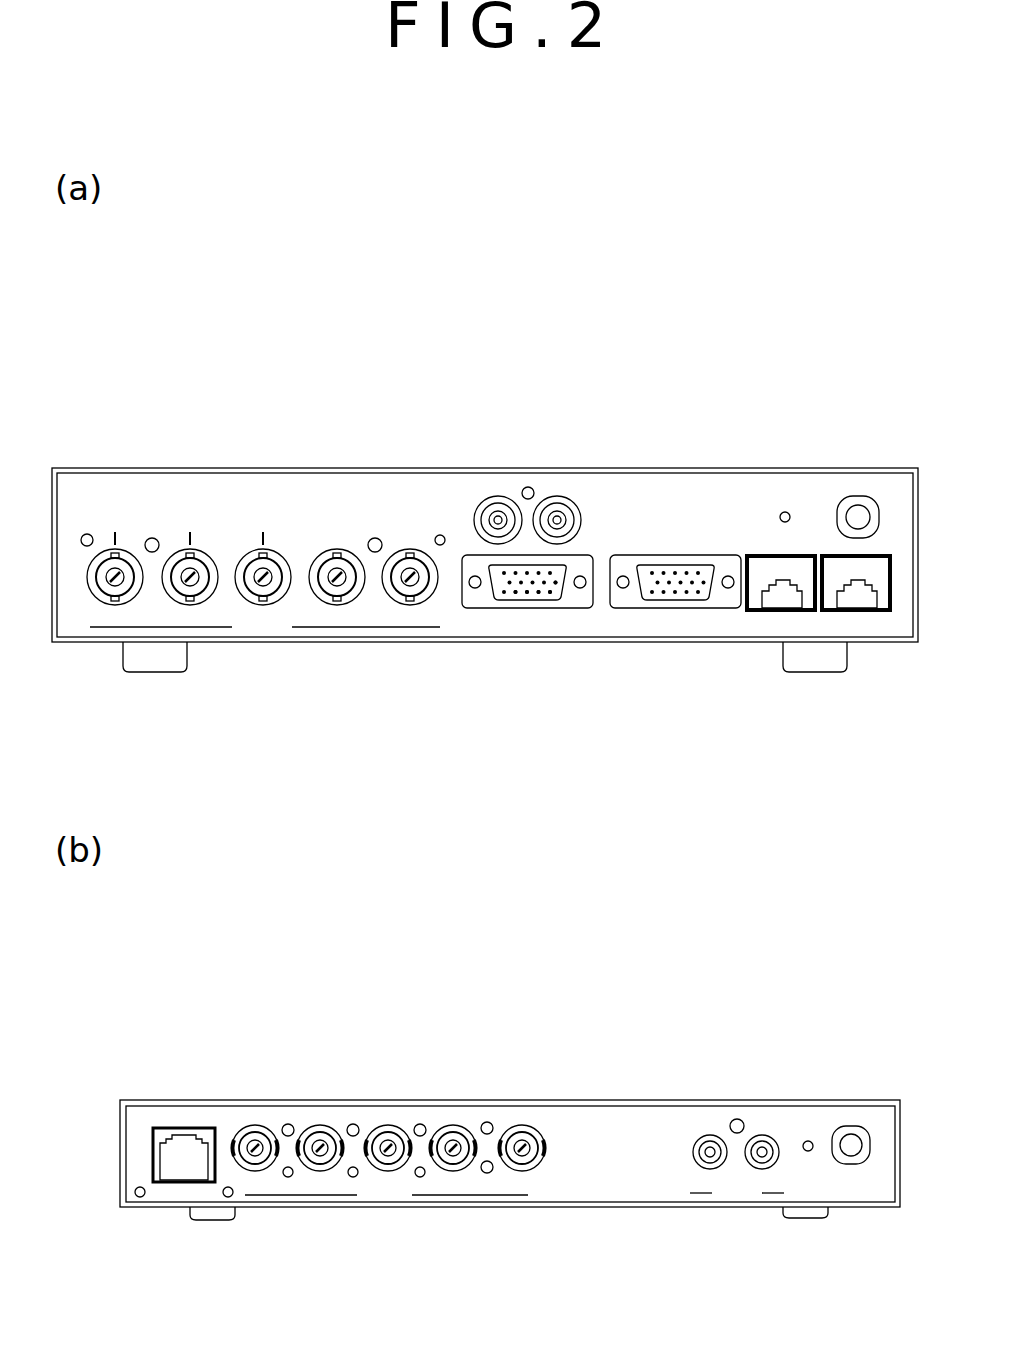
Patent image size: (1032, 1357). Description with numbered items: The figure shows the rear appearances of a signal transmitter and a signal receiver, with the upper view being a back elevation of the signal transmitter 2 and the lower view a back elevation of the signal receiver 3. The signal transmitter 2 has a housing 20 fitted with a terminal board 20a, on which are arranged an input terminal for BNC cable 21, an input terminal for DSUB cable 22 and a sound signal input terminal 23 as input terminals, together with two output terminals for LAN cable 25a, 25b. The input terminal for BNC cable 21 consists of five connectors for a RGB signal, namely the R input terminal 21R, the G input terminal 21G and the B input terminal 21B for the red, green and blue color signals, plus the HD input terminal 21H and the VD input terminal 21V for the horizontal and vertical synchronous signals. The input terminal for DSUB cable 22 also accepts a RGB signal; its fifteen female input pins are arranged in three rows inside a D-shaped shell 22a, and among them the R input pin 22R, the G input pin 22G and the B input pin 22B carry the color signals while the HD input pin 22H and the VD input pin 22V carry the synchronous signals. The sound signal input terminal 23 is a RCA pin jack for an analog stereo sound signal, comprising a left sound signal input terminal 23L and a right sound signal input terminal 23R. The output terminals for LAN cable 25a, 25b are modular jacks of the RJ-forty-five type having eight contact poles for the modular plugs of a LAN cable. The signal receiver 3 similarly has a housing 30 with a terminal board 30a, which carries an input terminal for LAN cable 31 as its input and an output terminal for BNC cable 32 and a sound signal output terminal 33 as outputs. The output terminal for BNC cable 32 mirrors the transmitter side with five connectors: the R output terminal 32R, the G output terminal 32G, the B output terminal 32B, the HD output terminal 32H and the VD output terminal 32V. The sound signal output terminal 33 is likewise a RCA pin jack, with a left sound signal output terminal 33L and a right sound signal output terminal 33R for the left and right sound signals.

The signal transmitter 2 is at (475, 330).
The housing 20 is at (445, 472).
The terminal board 20a is at (85, 480).
The input terminal for BNC cable 21 is at (435, 408).
The R input terminal 21R is at (115, 550).
The G input terminal 21G is at (190, 550).
The B input terminal 21B is at (263, 550).
The HD input terminal 21H is at (337, 550).
The VD input terminal 21V is at (410, 550).
The input terminal for DSUB cable 22 is at (707, 725).
The shell 22a is at (492, 590).
The VD input pin 22V is at (512, 598).
The HD input pin 22H is at (523, 598).
The B input pin 22B is at (540, 598).
The G input pin 22G is at (552, 598).
The R input pin 22R is at (572, 598).
The sound signal input terminal 23 is at (600, 408).
The left sound signal input terminal 23L is at (496, 496).
The right sound signal input terminal 23R is at (560, 496).
The output terminal for LAN cable 25a is at (770, 612).
The output terminal for LAN cable 25b is at (858, 612).
The signal receiver 3 is at (482, 945).
The housing 30 is at (610, 1100).
The terminal board 30a is at (148, 1118).
The input terminal for LAN cable 31 is at (195, 1128).
The output terminal for BNC cable 32 is at (567, 1055).
The R output terminal 32R is at (282, 1128).
The G output terminal 32G is at (350, 1128).
The B output terminal 32B is at (420, 1128).
The HD output terminal 32H is at (455, 1125).
The VD output terminal 32V is at (508, 1125).
The sound signal output terminal 33 is at (797, 1055).
The left sound signal output terminal 33L is at (710, 1135).
The right sound signal output terminal 33R is at (768, 1135).